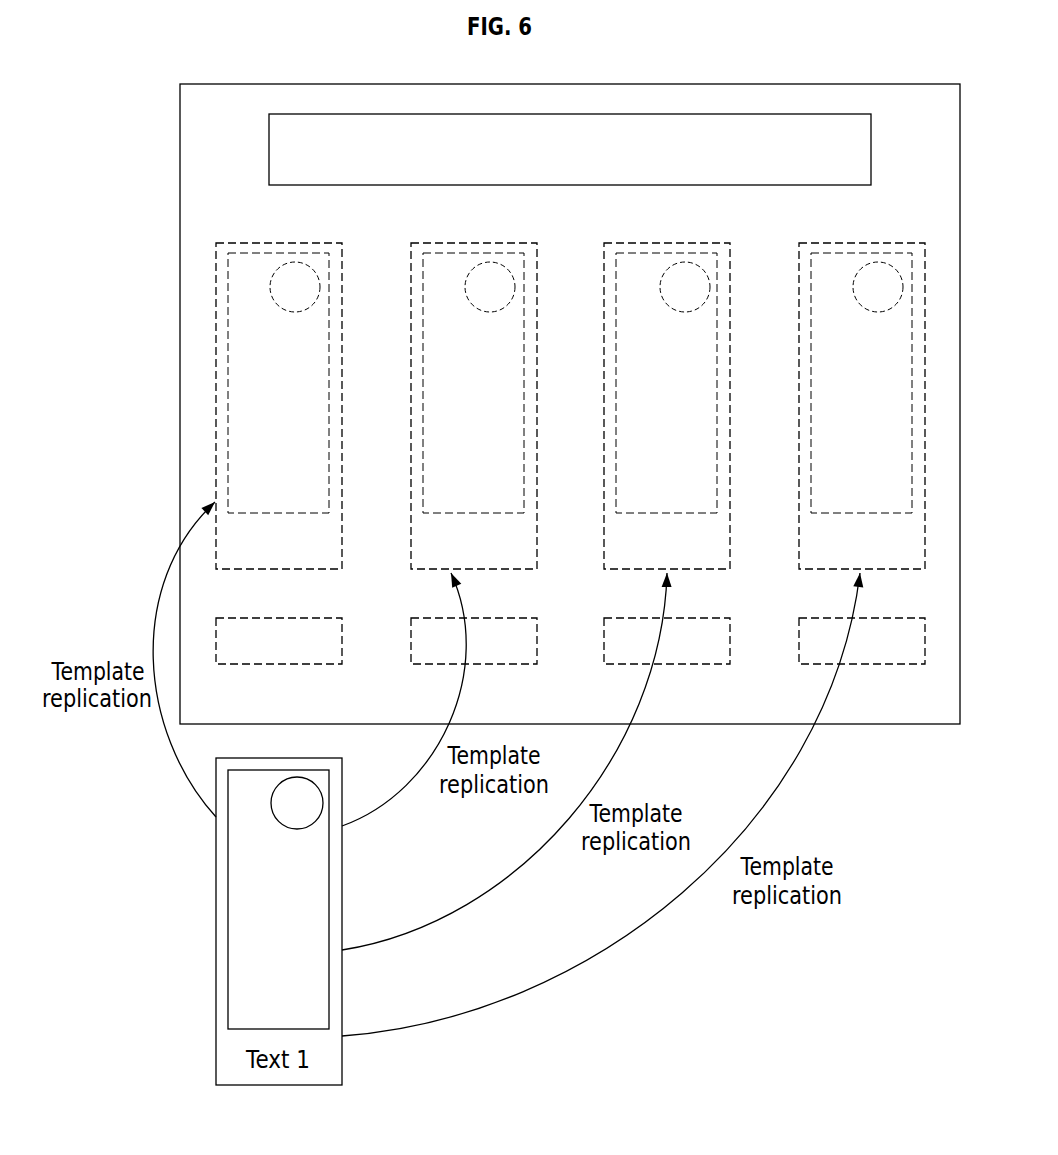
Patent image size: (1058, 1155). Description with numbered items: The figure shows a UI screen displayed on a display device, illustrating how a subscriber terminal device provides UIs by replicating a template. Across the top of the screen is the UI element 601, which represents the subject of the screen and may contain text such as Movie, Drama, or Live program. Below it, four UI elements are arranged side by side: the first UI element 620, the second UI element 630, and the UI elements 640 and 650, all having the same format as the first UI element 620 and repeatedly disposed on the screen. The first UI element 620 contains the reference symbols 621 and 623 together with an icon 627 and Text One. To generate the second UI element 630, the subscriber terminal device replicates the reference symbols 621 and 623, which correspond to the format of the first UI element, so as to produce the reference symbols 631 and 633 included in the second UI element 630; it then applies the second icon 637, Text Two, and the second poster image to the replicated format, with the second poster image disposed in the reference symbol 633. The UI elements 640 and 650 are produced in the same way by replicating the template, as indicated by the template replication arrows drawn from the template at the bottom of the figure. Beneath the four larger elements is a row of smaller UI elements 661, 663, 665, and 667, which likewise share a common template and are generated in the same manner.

The UI element 601 is at (871, 150).
The first UI element 620 is at (309, 384).
The reference symbol 621 is at (336, 263).
The reference symbol 623 is at (329, 347).
The icon 627 is at (321, 290).
The second UI element 630 is at (504, 384).
The reference symbol 631 is at (531, 263).
The reference symbol 633 is at (524, 347).
The icon 2 637 is at (516, 290).
The UI element 640 is at (687, 243).
The UI element 650 is at (880, 243).
The UI element 661 is at (297, 618).
The UI element 663 is at (492, 618).
The UI element 665 is at (685, 618).
The UI element 667 is at (878, 618).